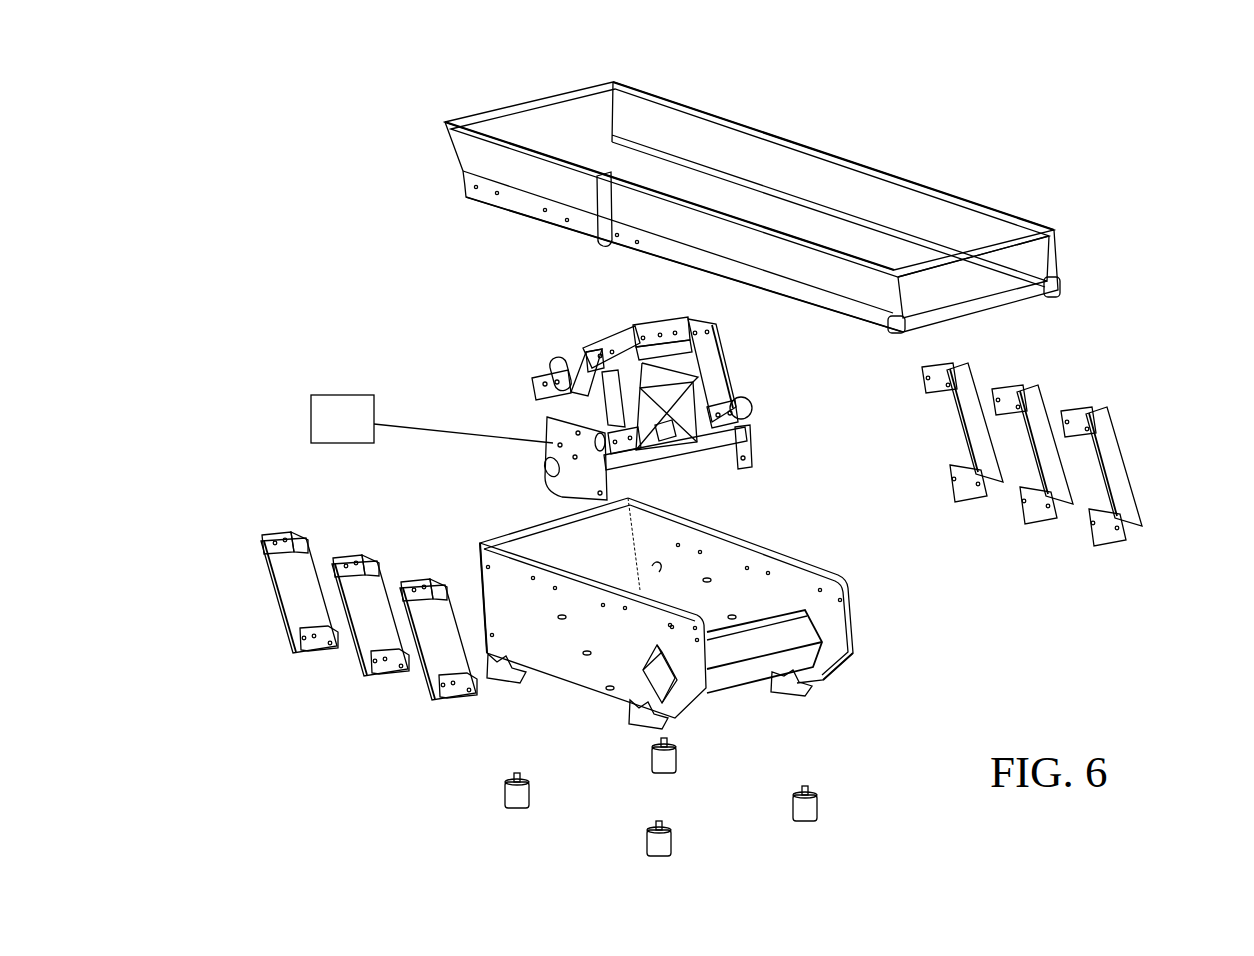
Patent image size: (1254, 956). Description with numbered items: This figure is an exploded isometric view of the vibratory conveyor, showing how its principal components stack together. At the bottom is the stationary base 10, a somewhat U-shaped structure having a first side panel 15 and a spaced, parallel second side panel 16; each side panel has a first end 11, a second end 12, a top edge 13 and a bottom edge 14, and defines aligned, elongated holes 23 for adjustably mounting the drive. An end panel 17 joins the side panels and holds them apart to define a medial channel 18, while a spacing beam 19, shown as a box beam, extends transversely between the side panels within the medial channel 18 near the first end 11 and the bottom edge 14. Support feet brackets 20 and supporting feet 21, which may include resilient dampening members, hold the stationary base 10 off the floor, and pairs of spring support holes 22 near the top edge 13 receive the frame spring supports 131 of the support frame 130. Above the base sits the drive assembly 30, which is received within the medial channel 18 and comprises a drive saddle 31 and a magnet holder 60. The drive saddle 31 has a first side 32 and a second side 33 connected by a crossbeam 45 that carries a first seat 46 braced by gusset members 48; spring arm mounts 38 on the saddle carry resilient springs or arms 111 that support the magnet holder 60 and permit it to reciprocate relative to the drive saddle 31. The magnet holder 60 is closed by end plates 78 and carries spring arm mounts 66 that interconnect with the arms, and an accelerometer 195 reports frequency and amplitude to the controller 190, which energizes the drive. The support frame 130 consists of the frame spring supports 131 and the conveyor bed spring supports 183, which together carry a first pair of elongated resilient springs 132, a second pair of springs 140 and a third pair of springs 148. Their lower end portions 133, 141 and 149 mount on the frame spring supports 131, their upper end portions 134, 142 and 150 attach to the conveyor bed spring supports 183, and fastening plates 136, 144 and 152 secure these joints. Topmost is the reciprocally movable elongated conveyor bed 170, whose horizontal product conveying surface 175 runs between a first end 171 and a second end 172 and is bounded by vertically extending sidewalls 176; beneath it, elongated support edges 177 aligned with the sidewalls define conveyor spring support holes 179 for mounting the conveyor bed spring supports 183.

The stationary base 10 is at (689, 625).
The first end 11 is at (854, 653).
The second end 12 is at (478, 548).
The top edge 13 is at (563, 567).
The bottom edge 14 is at (552, 682).
The first side panel 15 is at (583, 682).
The second side panel 16 is at (790, 563).
The end panel 17 is at (542, 548).
The medial channel 18 is at (658, 563).
The spacing beam 19 is at (743, 675).
The support feet brackets 20 is at (511, 684).
The supporting feet 21 is at (530, 793).
The spring support holes 22 is at (531, 580).
The elongated holes 23 is at (560, 620).
The drive assembly 30 is at (637, 404).
The drive saddle 31 is at (700, 460).
The first side 32 is at (577, 478).
The second side 33 is at (752, 452).
The spring arm mount 38 is at (750, 403).
The crossbeam 45 is at (620, 456).
The first seat 46 is at (667, 406).
The gusset members 48 is at (670, 442).
The magnet holder 60 is at (603, 347).
The spring arm mount 66 is at (535, 400).
The end plates 78 is at (667, 326).
The resilient spring or arm 111 is at (728, 366).
The support frame 130 is at (699, 555).
The frame spring supports 131 is at (333, 655).
The first pair of elongated resilient springs 132 is at (1113, 450).
The first lower end portion 133 is at (1143, 530).
The second upper end portion 134 is at (425, 597).
The fastening plate 136 is at (446, 686).
The second pair of elongated resilient springs 140 is at (352, 655).
The first lower end portion 141 is at (1068, 517).
The second upper end portion 142 is at (357, 580).
The fastening plate 144 is at (383, 675).
The third pair of elongated resilient springs 148 is at (295, 577).
The first lower end portion 149 is at (995, 500).
The second upper end portion 150 is at (262, 562).
The fastening plate 152 is at (303, 657).
The reciprocally movable elongated conveyor bed 170 is at (765, 216).
The first end 171 is at (1005, 290).
The second end 172 is at (597, 138).
The product conveying surface 175 is at (947, 283).
The sidewalls 176 is at (755, 152).
The support edges 177 is at (773, 288).
The conveyor spring support holes 179 is at (567, 222).
The conveyor bed spring supports 183 is at (277, 524).
The controller 190 is at (328, 428).
The accelerometer 195 is at (580, 368).